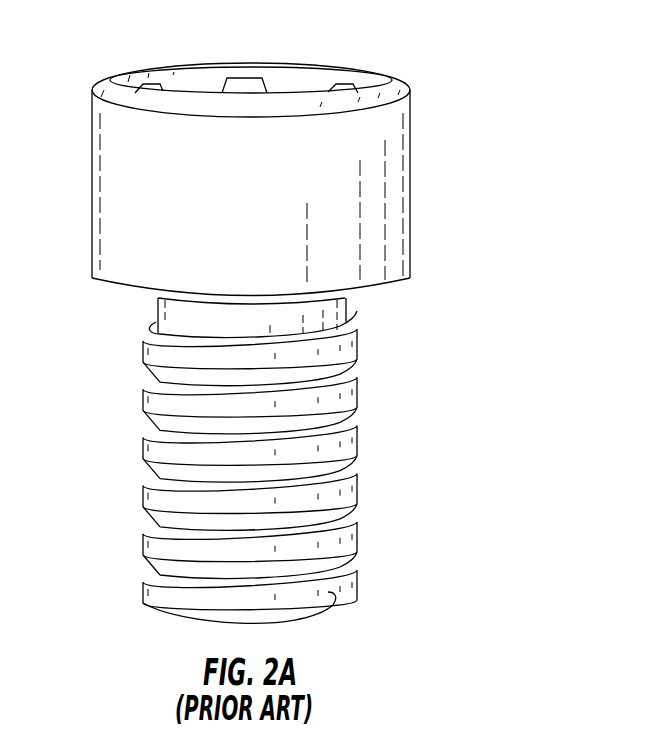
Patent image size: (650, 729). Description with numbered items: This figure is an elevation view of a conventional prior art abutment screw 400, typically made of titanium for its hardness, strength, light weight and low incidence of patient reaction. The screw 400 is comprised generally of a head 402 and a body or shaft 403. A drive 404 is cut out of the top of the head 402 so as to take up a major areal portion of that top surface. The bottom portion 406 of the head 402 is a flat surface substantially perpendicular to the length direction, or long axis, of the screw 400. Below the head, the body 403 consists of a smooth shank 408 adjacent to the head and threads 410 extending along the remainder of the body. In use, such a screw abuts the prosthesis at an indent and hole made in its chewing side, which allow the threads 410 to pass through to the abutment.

The abutment screw 400 is at (568, 49).
The head 402 is at (300, 150).
The body 403 is at (249, 467).
The drive 404 is at (340, 50).
The bottom portion 406 is at (391, 317).
The smooth shank 408 is at (342, 316).
The threads 410 is at (357, 437).